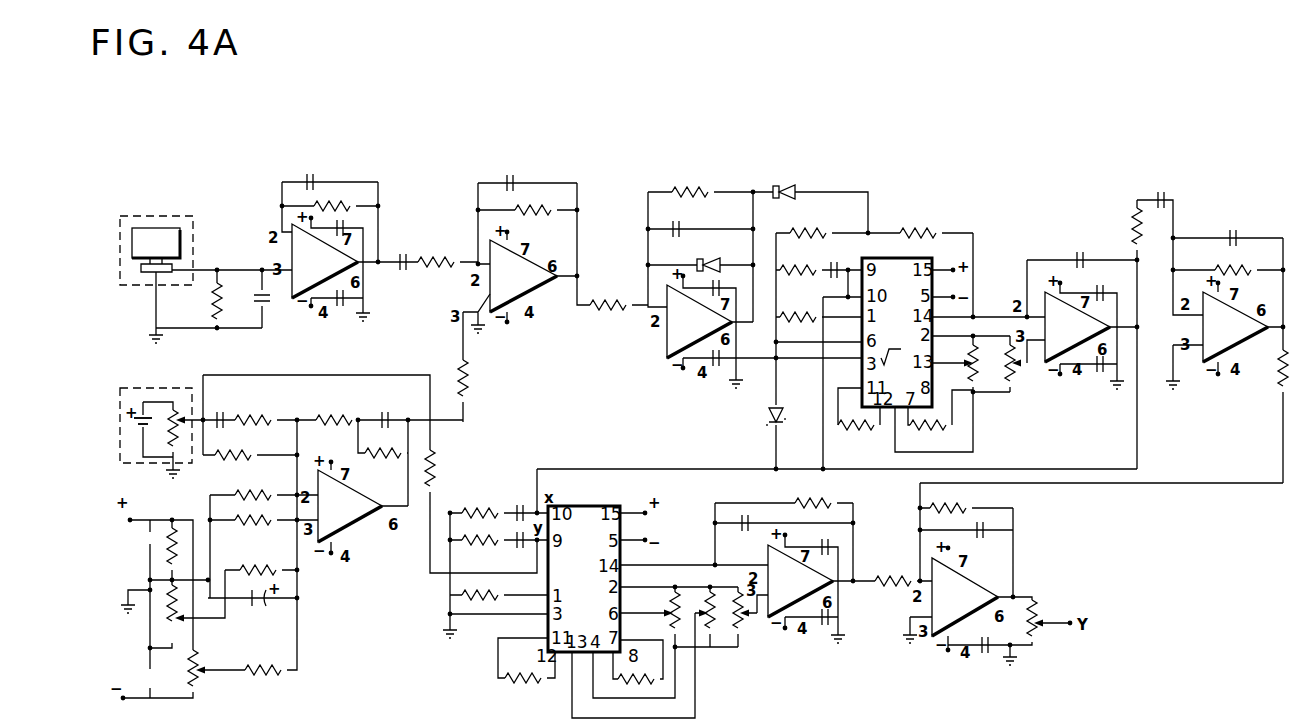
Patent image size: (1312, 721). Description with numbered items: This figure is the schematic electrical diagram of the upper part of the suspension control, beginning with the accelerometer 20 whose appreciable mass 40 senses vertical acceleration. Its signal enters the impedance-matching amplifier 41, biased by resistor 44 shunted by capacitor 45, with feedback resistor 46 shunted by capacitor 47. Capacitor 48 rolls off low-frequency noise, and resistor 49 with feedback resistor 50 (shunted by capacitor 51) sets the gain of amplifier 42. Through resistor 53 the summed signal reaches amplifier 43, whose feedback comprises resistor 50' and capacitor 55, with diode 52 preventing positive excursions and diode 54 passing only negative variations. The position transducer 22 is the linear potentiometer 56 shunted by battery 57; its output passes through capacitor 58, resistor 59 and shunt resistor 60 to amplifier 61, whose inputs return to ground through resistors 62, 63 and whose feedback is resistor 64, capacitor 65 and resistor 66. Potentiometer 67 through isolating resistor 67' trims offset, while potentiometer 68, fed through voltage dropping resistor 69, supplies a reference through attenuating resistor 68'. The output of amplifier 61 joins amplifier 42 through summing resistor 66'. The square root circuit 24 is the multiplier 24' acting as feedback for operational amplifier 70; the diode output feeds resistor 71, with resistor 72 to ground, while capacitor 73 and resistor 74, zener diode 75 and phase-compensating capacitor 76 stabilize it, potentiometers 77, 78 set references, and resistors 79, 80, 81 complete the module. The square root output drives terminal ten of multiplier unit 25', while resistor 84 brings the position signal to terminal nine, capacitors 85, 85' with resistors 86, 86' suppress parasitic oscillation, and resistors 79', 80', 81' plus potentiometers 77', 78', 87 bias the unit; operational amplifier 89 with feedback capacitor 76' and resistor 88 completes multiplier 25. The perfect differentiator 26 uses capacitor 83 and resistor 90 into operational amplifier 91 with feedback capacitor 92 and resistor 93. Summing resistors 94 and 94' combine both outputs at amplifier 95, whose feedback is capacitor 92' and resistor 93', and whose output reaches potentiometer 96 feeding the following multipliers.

The accelerometer 20 is at (172, 216).
The mass 40 is at (156, 250).
The resistor 44 is at (212, 310).
The capacitor 45 is at (259, 300).
The amplifier 41 is at (325, 263).
The resistor 46 is at (360, 206).
The capacitor 47 is at (310, 166).
The capacitor 48 is at (405, 255).
The resistor 49 is at (438, 255).
The amplifier 42 is at (523, 276).
The resistor 50 is at (540, 224).
The capacitor 51 is at (514, 166).
The resistor 53 is at (617, 286).
The amplifier 43 is at (699, 323).
The resistor 50' is at (685, 176).
The capacitor 55 is at (680, 222).
The diode 52 is at (708, 258).
The diode 54 is at (780, 184).
The resistor 72 is at (810, 230).
The resistor 71 is at (930, 230).
The capacitor 73 is at (840, 252).
The resistor 74 is at (812, 275).
The resistor 81 is at (798, 330).
The zener diode 75 is at (778, 406).
The resistor 80 is at (856, 441).
The resistor 79 is at (957, 441).
The potentiometer 78 is at (986, 381).
The potentiometer 77 is at (1025, 377).
The multiplier 24' is at (897, 332).
The square root circuit 24 is at (999, 252).
The operational amplifier 70 is at (1077, 328).
The capacitor 76 is at (1071, 249).
The resistor 90 is at (1132, 232).
The capacitor 83 is at (1163, 192).
The perfect differentiator 26 is at (1260, 194).
The capacitor 92 is at (1252, 227).
The resistor 93 is at (1245, 259).
The operational amplifier 91 is at (1235, 327).
The summing resistor 94 is at (1269, 385).
The position transducer 22 is at (130, 386).
The linear potentiometer 56 is at (180, 405).
The battery 57 is at (132, 434).
The capacitor 58 is at (220, 412).
The resistor 59 is at (262, 414).
The resistor 60 is at (232, 462).
The resistor 64 is at (330, 414).
The capacitor 65 is at (384, 412).
The resistor 66 is at (385, 470).
The summing resistor 66' is at (490, 378).
The resistor 84 is at (435, 460).
The operational amplifier 61 is at (350, 506).
The resistor 62 is at (259, 481).
The resistor 63 is at (250, 527).
The voltage dropping resistor 69 is at (178, 532).
The potentiometer 68 is at (145, 621).
The attenuating resistor 68' is at (244, 558).
The potentiometer 67 is at (214, 662).
The isolating resistor 67' is at (278, 686).
The resistor 86 is at (472, 500).
The capacitor 85 is at (511, 502).
The resistor 86' is at (475, 555).
The capacitor 85' is at (510, 553).
The resistor 81' is at (455, 606).
The multiplier unit 25' is at (584, 579).
The multiplier 25 is at (680, 522).
The resistor 80' is at (502, 693).
The resistor 79' is at (682, 694).
The potentiometer 87 is at (678, 590).
The potentiometer 78' is at (725, 636).
The potentiometer 77' is at (761, 628).
The resistor 88 is at (826, 500).
The feedback capacitor 76' is at (740, 539).
The operational amplifier 89 is at (800, 582).
The summing resistor 94' is at (886, 571).
The resistor 93' is at (971, 499).
The capacitor 92' is at (995, 545).
The amplifier 95 is at (965, 605).
The potentiometer 96 is at (1066, 592).